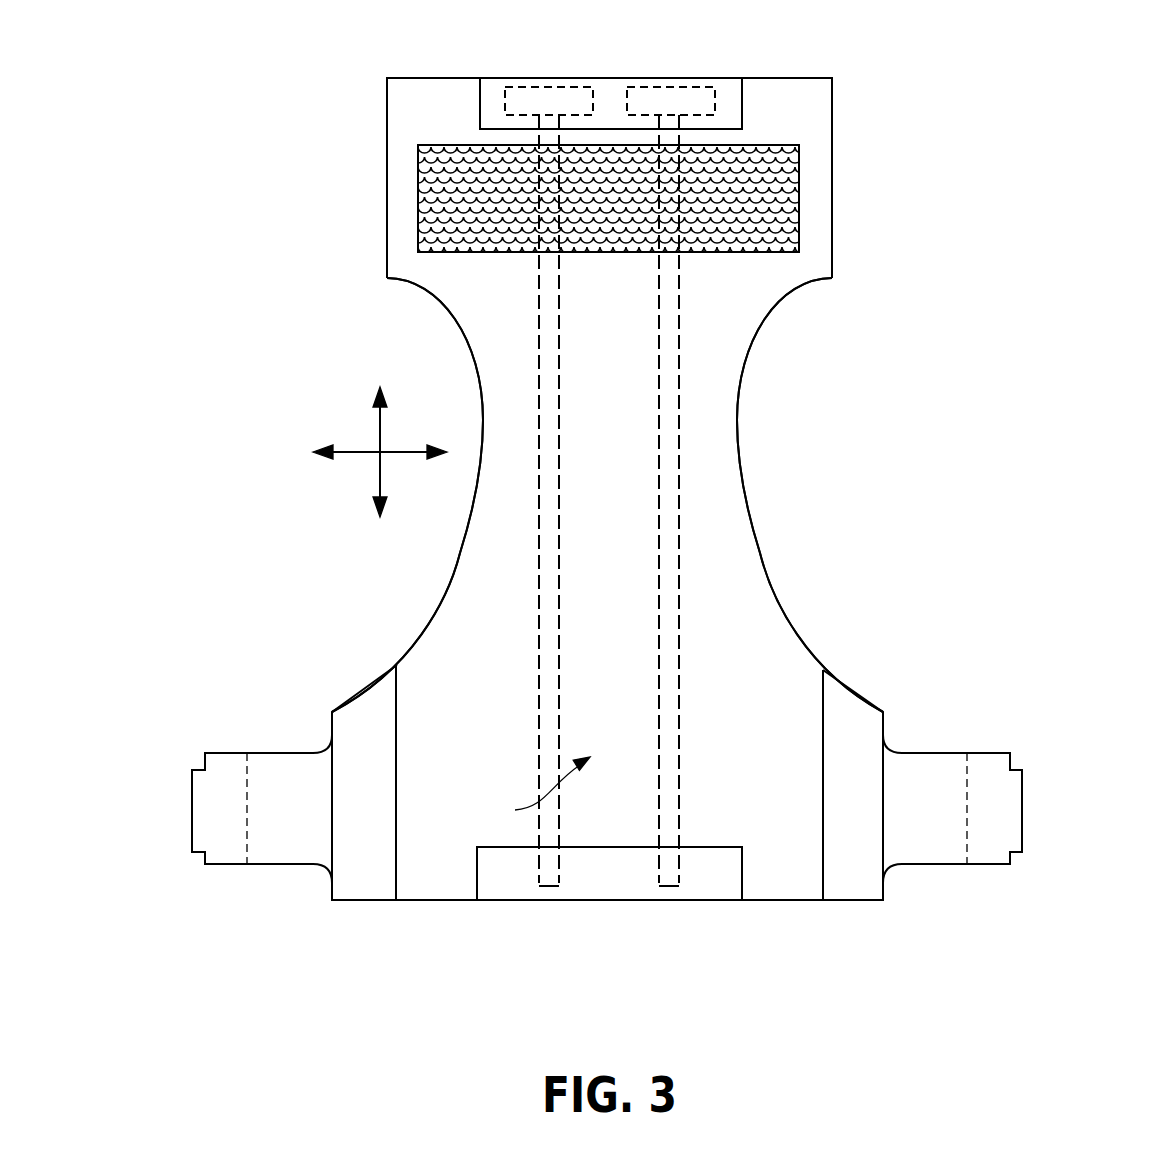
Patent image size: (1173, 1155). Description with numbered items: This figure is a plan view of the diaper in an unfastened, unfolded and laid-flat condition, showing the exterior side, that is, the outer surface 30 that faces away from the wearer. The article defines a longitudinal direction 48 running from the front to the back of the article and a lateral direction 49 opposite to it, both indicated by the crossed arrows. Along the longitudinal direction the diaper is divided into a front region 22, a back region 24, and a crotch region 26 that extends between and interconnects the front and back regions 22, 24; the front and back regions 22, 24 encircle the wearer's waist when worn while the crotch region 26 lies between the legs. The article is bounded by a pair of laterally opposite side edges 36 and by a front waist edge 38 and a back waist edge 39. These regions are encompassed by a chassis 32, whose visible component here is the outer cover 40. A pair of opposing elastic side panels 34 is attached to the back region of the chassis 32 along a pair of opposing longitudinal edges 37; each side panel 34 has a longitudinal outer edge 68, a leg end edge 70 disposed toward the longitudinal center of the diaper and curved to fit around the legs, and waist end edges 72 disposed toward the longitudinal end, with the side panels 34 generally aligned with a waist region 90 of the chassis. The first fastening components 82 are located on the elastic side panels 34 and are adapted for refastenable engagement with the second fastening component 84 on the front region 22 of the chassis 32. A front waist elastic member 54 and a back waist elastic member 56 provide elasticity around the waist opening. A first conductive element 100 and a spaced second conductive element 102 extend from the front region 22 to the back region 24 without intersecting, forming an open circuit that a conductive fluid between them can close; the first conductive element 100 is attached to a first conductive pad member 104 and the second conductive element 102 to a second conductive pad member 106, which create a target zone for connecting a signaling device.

The front region 22 is at (705, 312).
The back region 24 is at (767, 600).
The crotch region 26 is at (718, 420).
The outer surface 30 is at (612, 462).
The chassis 32 is at (505, 580).
The elastic side panels 34 is at (808, 93).
The side edges 36 is at (465, 530).
The longitudinal edges 37 is at (397, 810).
The front waist edge 38 is at (447, 78).
The back waist edge 39 is at (470, 900).
The outer cover 40 is at (463, 665).
The longitudinal direction 48 is at (383, 423).
The lateral direction 49 is at (400, 457).
The front waist elastic member 54 is at (705, 125).
The back waist elastic member 56 is at (567, 847).
The longitudinal outer edge 68 is at (337, 770).
The leg end edge 70 is at (357, 700).
The waist end edges 72 is at (833, 898).
The first fastening components 82 is at (232, 845).
The second fastening component 84 is at (587, 235).
The waist region 90 is at (536, 792).
The first conductive element 100 is at (560, 470).
The second conductive element 102 is at (680, 552).
The first conductive pad member 104 is at (537, 82).
The second conductive pad member 106 is at (673, 82).